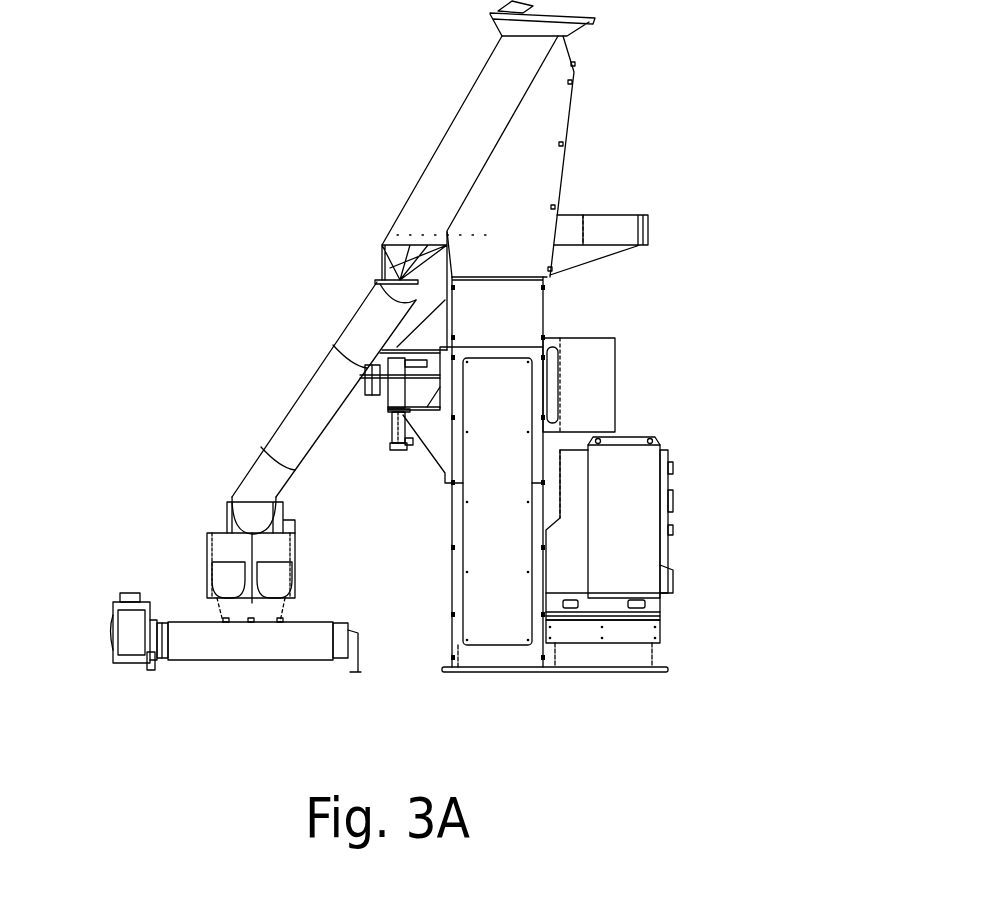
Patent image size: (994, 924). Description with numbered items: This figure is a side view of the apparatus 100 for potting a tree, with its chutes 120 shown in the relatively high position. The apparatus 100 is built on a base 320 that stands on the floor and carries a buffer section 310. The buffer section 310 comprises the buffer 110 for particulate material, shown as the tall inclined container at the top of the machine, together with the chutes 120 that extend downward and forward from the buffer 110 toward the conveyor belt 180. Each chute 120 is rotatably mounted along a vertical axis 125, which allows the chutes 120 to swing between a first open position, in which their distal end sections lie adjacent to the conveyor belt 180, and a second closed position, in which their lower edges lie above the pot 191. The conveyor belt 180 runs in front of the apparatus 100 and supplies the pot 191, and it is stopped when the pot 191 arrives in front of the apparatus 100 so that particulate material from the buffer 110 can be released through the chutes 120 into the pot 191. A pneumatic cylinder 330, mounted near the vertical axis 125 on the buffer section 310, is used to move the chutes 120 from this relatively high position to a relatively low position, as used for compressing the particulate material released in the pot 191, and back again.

The apparatus for potting a tree 100 is at (378, 151).
The buffer 110 is at (480, 103).
The chute 120 is at (310, 402).
The vertical axis 125 is at (397, 370).
The conveyor belt 180 is at (195, 622).
The pot 191 is at (240, 610).
The buffer section 310 is at (590, 162).
The base 320 is at (578, 712).
The pneumatic cylinder 330 is at (400, 433).